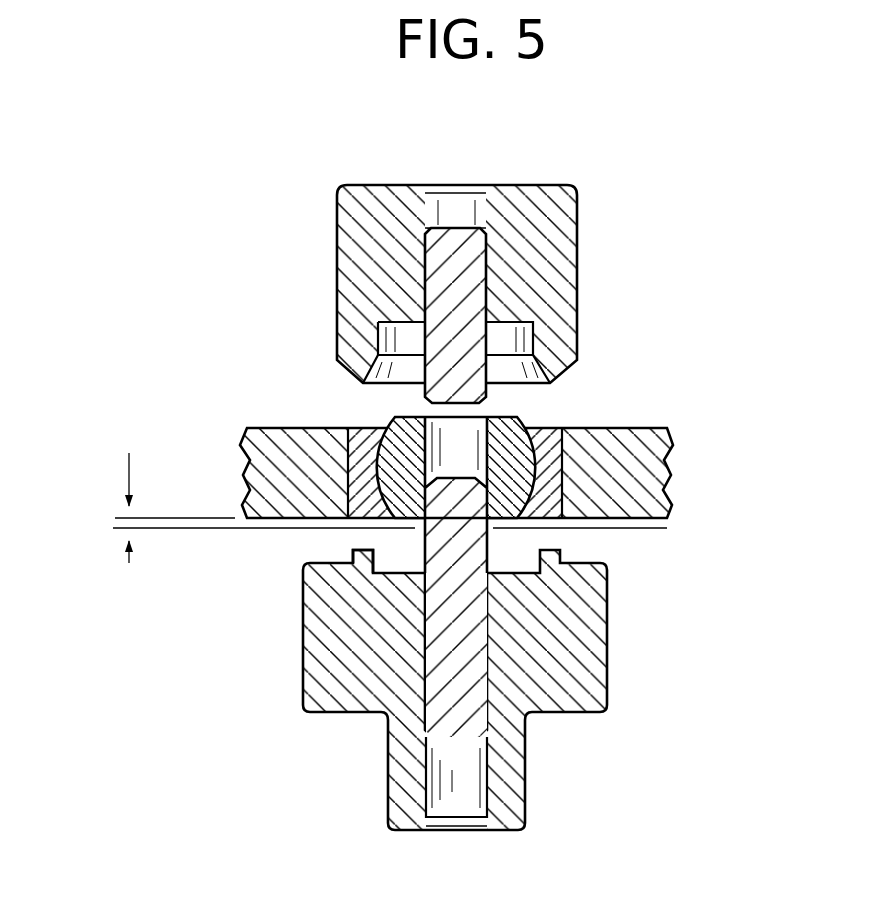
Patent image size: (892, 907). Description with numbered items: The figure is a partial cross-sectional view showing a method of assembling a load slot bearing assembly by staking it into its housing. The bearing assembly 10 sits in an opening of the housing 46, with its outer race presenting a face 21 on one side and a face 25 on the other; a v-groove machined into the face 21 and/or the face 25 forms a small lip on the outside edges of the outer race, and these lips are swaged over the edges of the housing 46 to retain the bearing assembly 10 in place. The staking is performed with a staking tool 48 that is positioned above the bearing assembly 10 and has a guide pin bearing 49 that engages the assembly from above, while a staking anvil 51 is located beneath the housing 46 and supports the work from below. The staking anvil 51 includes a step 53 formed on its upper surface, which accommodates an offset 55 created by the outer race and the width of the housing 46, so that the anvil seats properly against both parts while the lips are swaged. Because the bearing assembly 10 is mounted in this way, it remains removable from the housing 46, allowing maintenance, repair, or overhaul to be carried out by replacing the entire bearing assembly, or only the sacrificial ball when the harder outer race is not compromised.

The staking tool 48 is at (589, 257).
The guide pin bearing 49 is at (495, 397).
The bearing assembly 10 is at (553, 417).
The face 21 is at (385, 437).
The housing 46 is at (682, 489).
The face 25 is at (530, 518).
The offset 55 is at (129, 563).
The step 53 is at (363, 560).
The staking anvil 51 is at (619, 668).